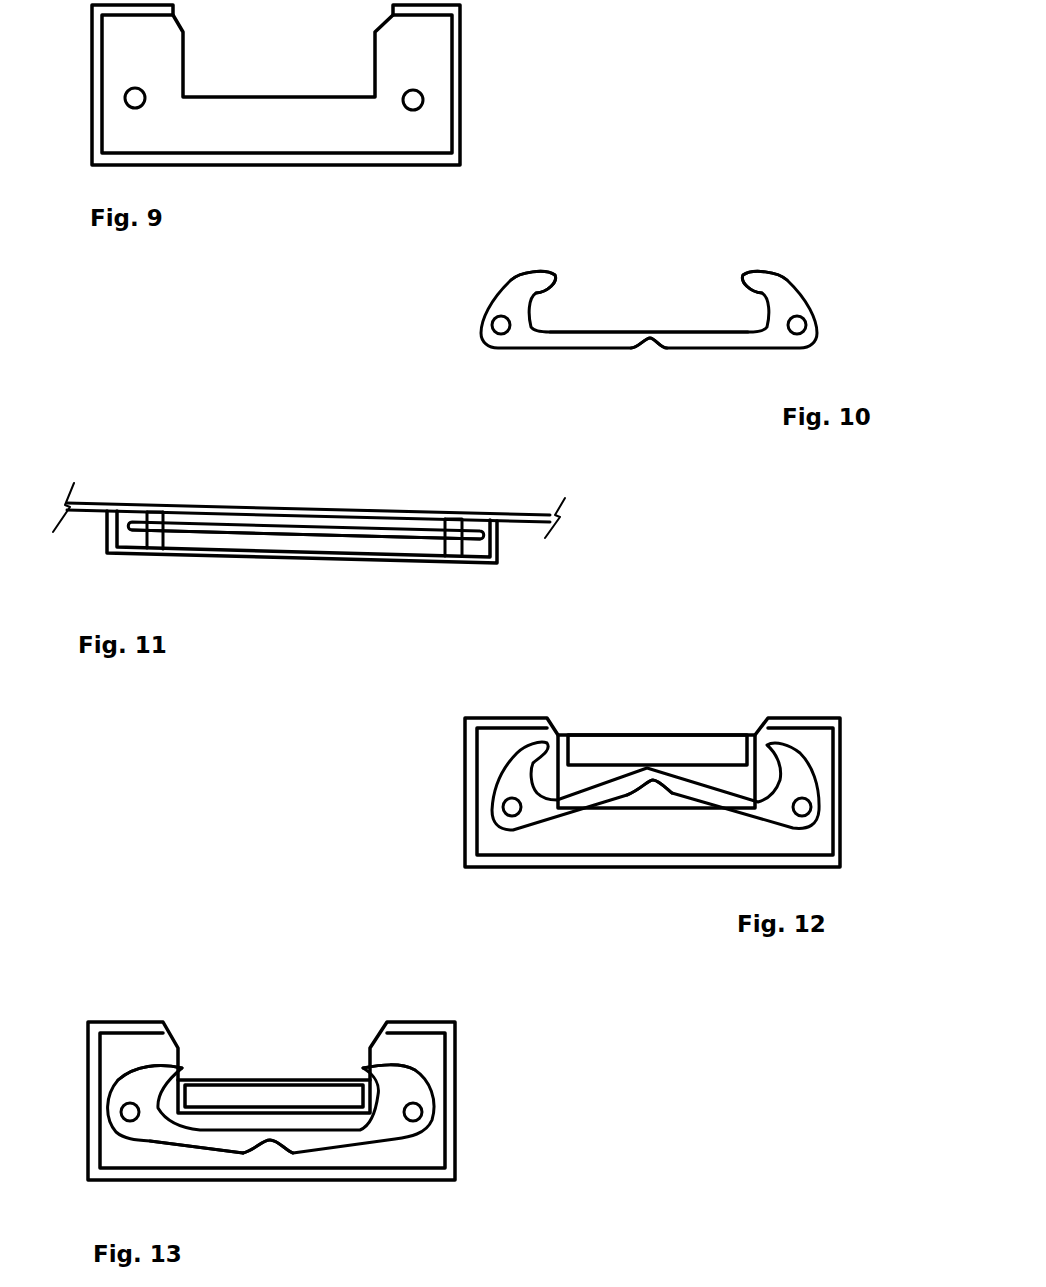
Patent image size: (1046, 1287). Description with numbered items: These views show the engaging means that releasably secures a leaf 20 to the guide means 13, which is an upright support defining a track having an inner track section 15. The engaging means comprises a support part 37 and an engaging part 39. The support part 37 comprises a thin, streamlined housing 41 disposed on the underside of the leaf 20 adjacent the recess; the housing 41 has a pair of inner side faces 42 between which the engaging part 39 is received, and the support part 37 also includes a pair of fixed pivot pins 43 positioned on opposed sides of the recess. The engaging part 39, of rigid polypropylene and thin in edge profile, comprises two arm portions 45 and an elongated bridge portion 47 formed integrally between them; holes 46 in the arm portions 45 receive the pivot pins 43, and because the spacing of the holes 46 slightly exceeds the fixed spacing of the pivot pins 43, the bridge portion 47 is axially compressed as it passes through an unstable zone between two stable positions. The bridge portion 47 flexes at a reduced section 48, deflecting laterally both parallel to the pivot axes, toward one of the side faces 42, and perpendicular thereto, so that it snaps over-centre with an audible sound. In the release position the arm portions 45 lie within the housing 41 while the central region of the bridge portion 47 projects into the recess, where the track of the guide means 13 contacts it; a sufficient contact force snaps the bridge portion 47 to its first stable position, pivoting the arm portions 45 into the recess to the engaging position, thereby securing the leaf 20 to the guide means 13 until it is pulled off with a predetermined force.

In FIG. 12, the guide means 13 is at (712, 735).
In FIG. 13, the guide means 13 is at (245, 1077).
In FIG. 12, the inner track section 15 is at (602, 745).
In FIG. 13, the inner track section 15 is at (292, 1097).
In FIG. 11, the leaf 20 is at (522, 512).
In FIG. 9, the support part 37 is at (463, 77).
In FIG. 11, the support part 37 is at (508, 545).
In FIG. 12, the support part 37 is at (847, 757).
In FIG. 13, the support part 37 is at (460, 1077).
In FIG. 10, the engaging part 39 is at (787, 273).
In FIG. 11, the engaging part 39 is at (370, 512).
In FIG. 12, the engaging part 39 is at (722, 782).
In FIG. 13, the engaging part 39 is at (133, 1076).
In FIG. 9, the housing 41 is at (443, 130).
In FIG. 11, the housing 41 is at (475, 567).
In FIG. 11, the inner side faces 42 is at (272, 518).
In FIG. 9, the fixed pivot pins 43 is at (125, 98).
In FIG. 11, the fixed pivot pins 43 is at (153, 515).
In FIG. 12, the fixed pivot pins 43 is at (510, 807).
In FIG. 13, the fixed pivot pins 43 is at (130, 1112).
In FIG. 10, the arm portions 45 is at (520, 293).
In FIG. 13, the arm portions 45 is at (182, 1075).
In FIG. 10, the holes 46 is at (800, 328).
In FIG. 10, the bridge portion 47 is at (610, 335).
In FIG. 11, the bridge portion 47 is at (310, 535).
In FIG. 13, the bridge portion 47 is at (207, 1135).
In FIG. 10, the reduced section 48 is at (652, 340).
In FIG. 12, the reduced section 48 is at (648, 770).
In FIG. 13, the reduced section 48 is at (268, 1143).